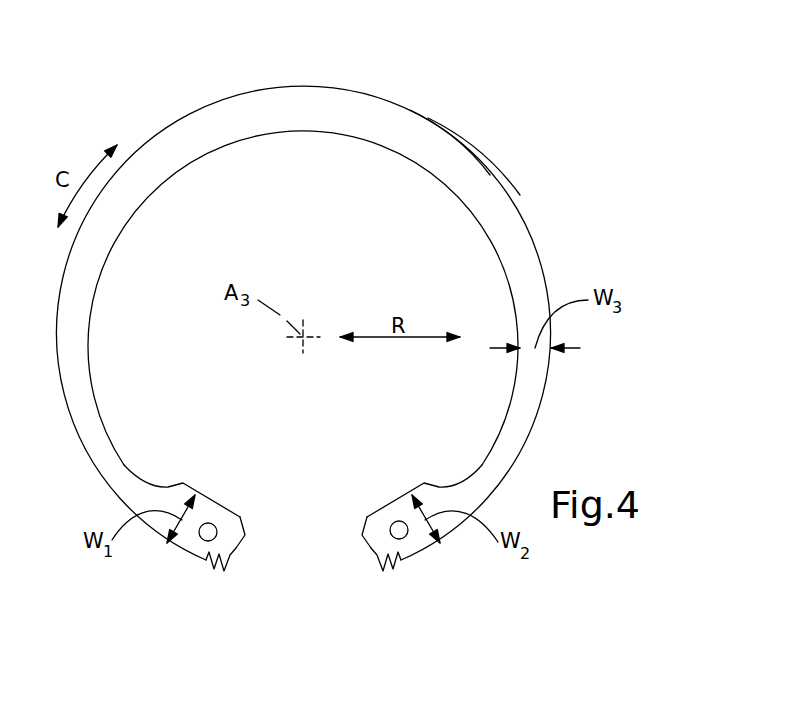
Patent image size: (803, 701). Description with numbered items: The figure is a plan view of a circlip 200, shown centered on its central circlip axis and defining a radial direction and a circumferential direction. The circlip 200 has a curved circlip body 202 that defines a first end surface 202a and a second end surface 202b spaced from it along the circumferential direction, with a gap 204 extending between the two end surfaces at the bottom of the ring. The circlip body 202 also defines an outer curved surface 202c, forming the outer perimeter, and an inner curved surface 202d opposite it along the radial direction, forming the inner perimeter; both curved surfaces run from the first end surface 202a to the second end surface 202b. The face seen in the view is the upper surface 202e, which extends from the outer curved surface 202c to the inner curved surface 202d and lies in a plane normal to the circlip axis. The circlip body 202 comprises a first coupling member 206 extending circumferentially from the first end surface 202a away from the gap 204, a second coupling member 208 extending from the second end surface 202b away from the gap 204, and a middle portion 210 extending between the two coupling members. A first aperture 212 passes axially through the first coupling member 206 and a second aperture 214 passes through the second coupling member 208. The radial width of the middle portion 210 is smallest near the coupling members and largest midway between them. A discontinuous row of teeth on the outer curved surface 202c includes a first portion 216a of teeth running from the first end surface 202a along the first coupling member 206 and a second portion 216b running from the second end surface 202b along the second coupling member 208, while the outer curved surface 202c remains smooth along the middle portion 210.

The circlip 200 is at (617, 125).
The circlip body 202 is at (322, 86).
The first end surface 202a is at (238, 552).
The second end surface 202b is at (369, 552).
The outer curved surface 202c is at (402, 107).
The inner curved surface 202d is at (383, 148).
The upper surface 202e is at (452, 158).
The gap 204 is at (305, 560).
The first coupling member 206 is at (177, 500).
The second coupling member 208 is at (433, 500).
The middle portion 210 is at (213, 118).
The first aperture 212 is at (213, 527).
The second aperture 214 is at (395, 523).
The first portion of teeth 216a is at (215, 572).
The second portion of teeth 216b is at (394, 578).